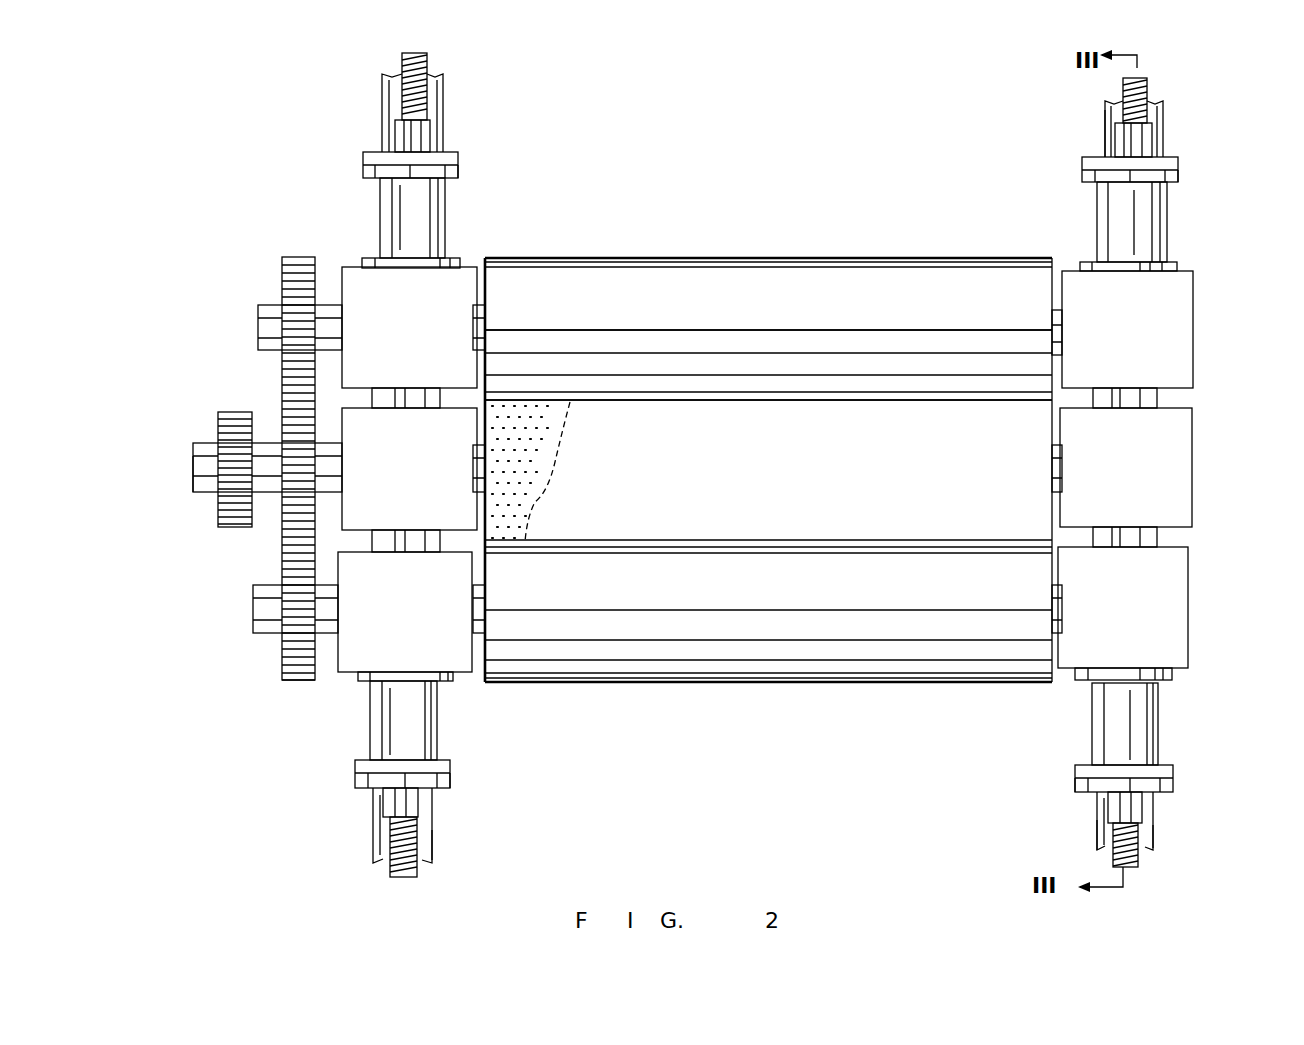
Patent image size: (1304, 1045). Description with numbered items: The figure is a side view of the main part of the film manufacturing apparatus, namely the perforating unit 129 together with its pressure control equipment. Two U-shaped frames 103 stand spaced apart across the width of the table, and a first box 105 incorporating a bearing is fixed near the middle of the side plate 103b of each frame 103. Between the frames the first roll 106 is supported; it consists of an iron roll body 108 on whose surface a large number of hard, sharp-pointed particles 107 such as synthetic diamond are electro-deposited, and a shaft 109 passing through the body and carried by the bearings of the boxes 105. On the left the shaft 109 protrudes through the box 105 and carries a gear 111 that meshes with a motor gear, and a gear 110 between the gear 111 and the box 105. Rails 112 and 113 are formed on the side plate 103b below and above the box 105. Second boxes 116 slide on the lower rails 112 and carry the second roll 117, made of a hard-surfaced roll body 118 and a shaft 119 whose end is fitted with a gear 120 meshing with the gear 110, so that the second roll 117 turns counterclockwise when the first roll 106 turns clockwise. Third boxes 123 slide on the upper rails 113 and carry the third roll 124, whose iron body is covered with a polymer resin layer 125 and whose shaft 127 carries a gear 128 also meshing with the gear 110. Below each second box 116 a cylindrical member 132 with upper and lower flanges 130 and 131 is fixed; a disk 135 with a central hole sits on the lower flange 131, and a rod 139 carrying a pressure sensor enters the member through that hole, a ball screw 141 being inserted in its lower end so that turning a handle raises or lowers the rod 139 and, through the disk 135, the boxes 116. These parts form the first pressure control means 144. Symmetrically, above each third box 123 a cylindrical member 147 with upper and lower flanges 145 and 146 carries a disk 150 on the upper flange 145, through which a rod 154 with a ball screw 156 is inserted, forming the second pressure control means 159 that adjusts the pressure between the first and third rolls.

The U-shaped frame 103 is at (443, 847).
The side plate 103b is at (373, 830).
The first box 105 is at (455, 522).
The first roll 106 is at (1052, 508).
The particles 107 is at (548, 445).
The roll body 108 is at (477, 537).
The shaft 109 is at (197, 493).
The gear 110 is at (280, 525).
The gear 111 is at (218, 423).
The rail 112 is at (408, 538).
The rail 113 is at (410, 397).
The second box 116 is at (460, 670).
The second roll 117 is at (895, 685).
The roll body 118 is at (812, 685).
The shaft 119 is at (260, 617).
The gear 120 is at (280, 677).
The third box 123 is at (463, 277).
The third roll 124 is at (773, 257).
The polymer resin layer 125 is at (653, 278).
The shaft 127 is at (258, 337).
The gear 128 is at (282, 287).
The perforating unit 129 is at (878, 257).
The upper flange 130 is at (362, 683).
The lower flange 131 is at (453, 768).
The cylindrical member 132 is at (437, 742).
The disk 135 is at (452, 782).
The rod 139 is at (383, 805).
The ball screw 141 is at (390, 858).
The first pressure control means 144 is at (1022, 862).
The upper flange 145 is at (458, 171).
The lower flange 146 is at (453, 253).
The cylindrical member 147 is at (445, 195).
The disk 150 is at (458, 158).
The rod 154 is at (430, 130).
The ball screw 156 is at (440, 84).
The second pressure control means 159 is at (1088, 138).